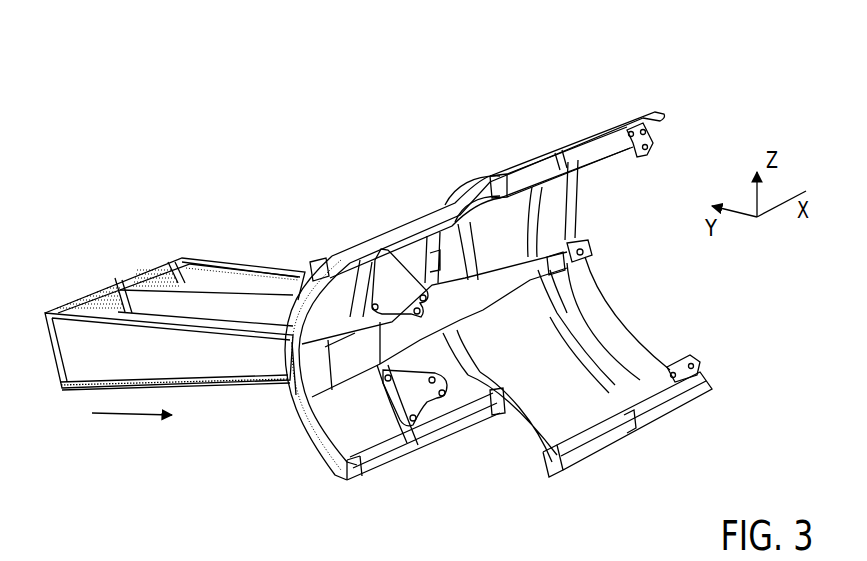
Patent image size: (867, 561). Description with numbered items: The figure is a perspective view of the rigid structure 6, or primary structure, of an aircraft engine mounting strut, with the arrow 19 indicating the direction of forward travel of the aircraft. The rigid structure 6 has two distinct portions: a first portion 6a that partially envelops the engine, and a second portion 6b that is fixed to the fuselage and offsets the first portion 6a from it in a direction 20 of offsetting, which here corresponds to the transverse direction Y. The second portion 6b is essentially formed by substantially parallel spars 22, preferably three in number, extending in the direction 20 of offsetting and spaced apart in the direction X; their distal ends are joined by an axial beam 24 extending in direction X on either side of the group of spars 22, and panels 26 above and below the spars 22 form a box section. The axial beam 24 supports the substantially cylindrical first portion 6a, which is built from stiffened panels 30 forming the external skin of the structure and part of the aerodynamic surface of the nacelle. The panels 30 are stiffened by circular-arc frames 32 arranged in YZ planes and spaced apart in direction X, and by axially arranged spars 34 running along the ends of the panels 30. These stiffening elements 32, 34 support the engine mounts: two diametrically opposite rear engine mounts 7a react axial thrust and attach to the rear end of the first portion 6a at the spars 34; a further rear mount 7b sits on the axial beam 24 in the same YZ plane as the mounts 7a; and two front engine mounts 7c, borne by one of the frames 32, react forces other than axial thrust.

The rigid structure 6 is at (233, 216).
The first portion 6a is at (601, 116).
The second portion 6b is at (210, 400).
The engine mounts 7a is at (653, 142).
The rear mount 7b is at (592, 251).
The front engine mounts 7c is at (382, 252).
The arrow 19 is at (433, 139).
The direction of offsetting 20 is at (133, 417).
The spars 22 is at (232, 327).
The axial beam 24 is at (301, 380).
The panels 26 is at (97, 290).
The stiffened panels 30 is at (490, 210).
The frames 32 is at (590, 340).
The spars 34 is at (540, 167).